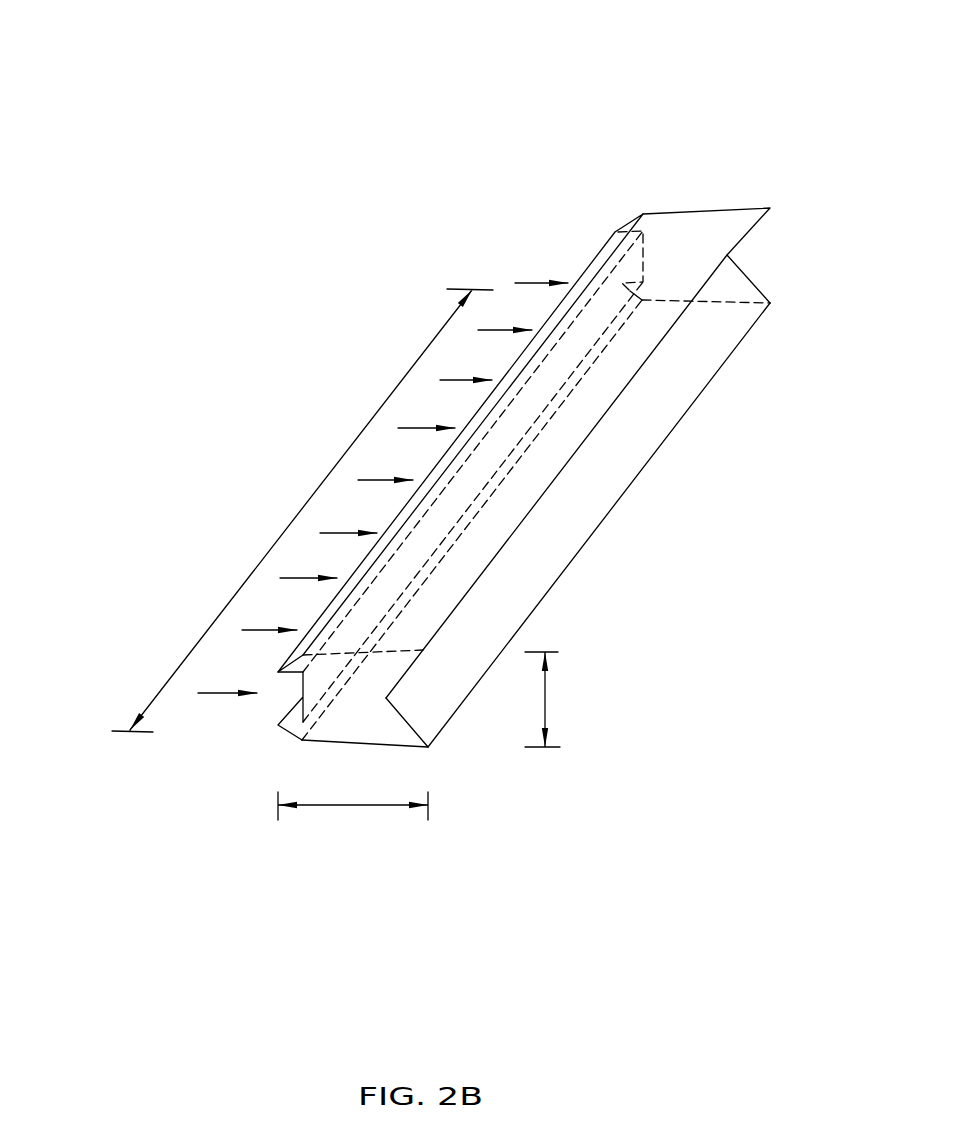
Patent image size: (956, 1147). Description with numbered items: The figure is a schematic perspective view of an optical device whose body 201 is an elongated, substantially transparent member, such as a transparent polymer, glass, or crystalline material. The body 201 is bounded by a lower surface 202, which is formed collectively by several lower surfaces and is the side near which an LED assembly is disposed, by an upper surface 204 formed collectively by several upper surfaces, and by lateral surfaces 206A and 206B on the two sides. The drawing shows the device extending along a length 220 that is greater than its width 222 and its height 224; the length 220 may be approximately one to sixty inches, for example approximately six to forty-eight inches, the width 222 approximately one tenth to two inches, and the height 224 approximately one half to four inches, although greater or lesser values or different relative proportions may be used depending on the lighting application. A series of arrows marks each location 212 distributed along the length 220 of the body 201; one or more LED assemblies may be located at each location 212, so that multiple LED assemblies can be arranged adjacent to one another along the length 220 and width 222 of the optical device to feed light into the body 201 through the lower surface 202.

The body 201 is at (448, 427).
The lower surface 202 is at (272, 725).
The upper surface 204 is at (457, 730).
The lateral surface 206A is at (722, 201).
The lateral surface 206B is at (343, 752).
The location 212 is at (532, 283).
The length 220 is at (300, 511).
The width 222 is at (545, 695).
The height 224 is at (338, 807).